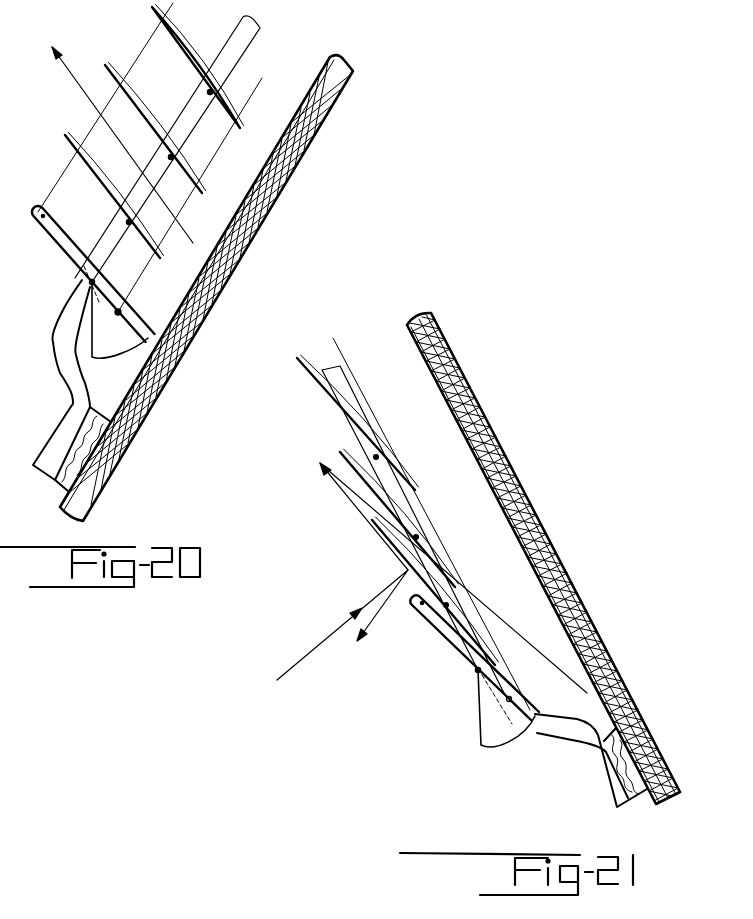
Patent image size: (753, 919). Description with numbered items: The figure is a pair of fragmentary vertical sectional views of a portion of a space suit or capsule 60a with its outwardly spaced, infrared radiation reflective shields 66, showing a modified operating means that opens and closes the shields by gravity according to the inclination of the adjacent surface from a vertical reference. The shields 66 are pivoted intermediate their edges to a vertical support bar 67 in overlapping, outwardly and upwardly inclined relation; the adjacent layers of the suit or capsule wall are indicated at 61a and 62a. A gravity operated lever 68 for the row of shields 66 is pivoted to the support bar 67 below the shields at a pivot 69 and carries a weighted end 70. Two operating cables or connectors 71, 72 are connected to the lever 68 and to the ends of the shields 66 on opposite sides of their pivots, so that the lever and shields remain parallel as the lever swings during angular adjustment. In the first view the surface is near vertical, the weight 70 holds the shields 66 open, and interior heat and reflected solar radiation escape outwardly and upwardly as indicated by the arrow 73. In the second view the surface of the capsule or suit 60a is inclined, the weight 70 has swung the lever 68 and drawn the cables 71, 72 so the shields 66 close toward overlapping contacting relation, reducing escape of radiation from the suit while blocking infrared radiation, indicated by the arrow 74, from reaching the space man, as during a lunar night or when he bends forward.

In FIG. 20, the space suit or capsule 60a is at (345, 99).
In FIG. 21, the space suit or capsule 60a is at (512, 454).
In FIG. 20, the mesh layer of strip 61a is at (291, 178).
In FIG. 21, the mesh layer of strip 61a is at (478, 398).
In FIG. 20, the edge of strip 62a is at (296, 113).
In FIG. 21, the edge of strip 62a is at (430, 380).
In FIG. 20, the shields 66 is at (165, 88).
In FIG. 21, the shields 66 is at (366, 440).
In FIG. 20, the vertical support bar 67 is at (60, 313).
In FIG. 21, the vertical support bar 67 is at (560, 740).
In FIG. 20, the gravity operated lever 68 is at (52, 238).
In FIG. 21, the gravity operated lever 68 is at (438, 632).
In FIG. 20, the pivot 69 is at (95, 282).
In FIG. 21, the pivot 69 is at (478, 671).
In FIG. 20, the weighted end 70 is at (106, 360).
In FIG. 21, the weighted end 70 is at (480, 735).
In FIG. 20, the operating cable 71 is at (146, 52).
In FIG. 21, the operating cable 71 is at (340, 436).
In FIG. 20, the operating cable 72 is at (213, 161).
In FIG. 21, the operating cable 72 is at (341, 356).
In FIG. 20, the arrow 73 is at (74, 80).
In FIG. 21, the arrow 73 is at (348, 495).
In FIG. 21, the arrow 74 is at (338, 628).